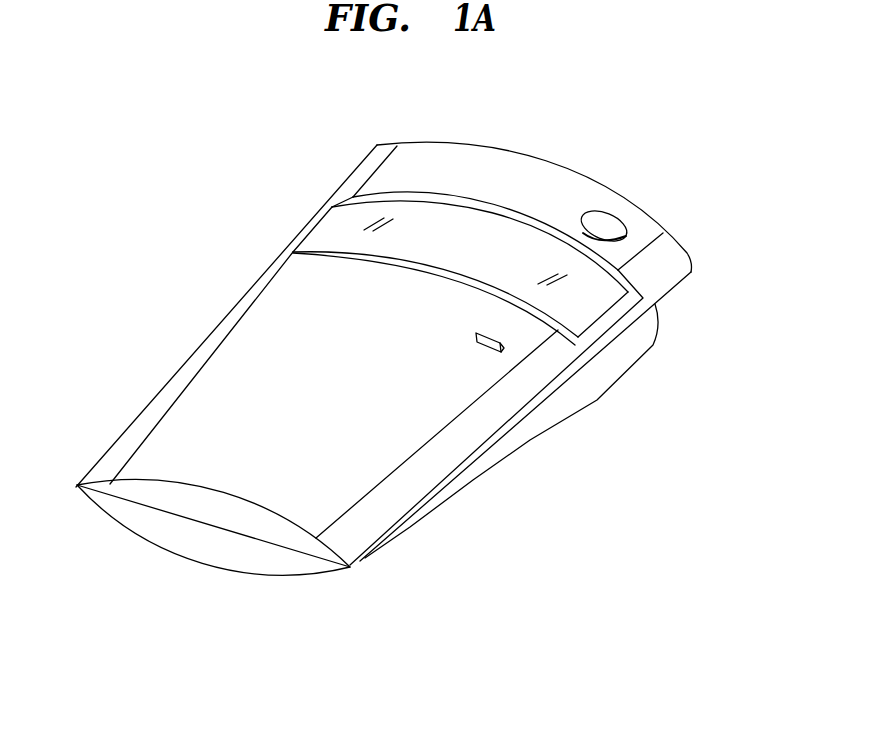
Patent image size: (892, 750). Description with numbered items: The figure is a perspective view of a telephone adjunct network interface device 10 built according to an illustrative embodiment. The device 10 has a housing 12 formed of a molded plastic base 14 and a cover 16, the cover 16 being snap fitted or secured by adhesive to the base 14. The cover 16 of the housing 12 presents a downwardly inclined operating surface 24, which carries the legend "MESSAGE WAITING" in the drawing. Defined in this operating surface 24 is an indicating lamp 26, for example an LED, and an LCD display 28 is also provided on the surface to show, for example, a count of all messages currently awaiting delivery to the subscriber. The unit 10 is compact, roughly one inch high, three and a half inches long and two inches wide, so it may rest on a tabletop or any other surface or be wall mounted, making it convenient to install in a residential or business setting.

The telephone adjunct network interface device 10 is at (545, 154).
The housing 12 is at (631, 367).
The base 14 is at (201, 550).
The cover 16 is at (113, 486).
The operating surface 24 is at (324, 443).
The indicating lamp 26 is at (505, 352).
The LCD display 28 is at (473, 259).